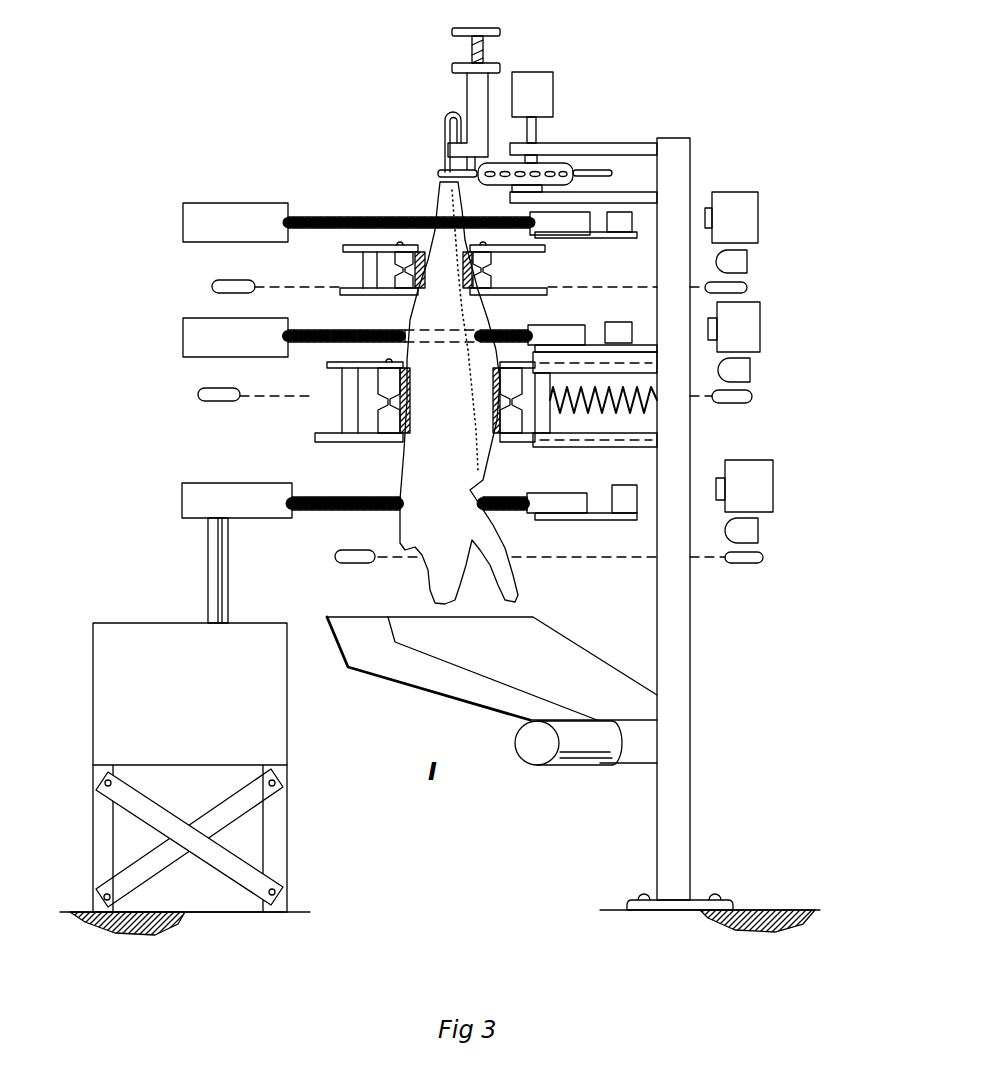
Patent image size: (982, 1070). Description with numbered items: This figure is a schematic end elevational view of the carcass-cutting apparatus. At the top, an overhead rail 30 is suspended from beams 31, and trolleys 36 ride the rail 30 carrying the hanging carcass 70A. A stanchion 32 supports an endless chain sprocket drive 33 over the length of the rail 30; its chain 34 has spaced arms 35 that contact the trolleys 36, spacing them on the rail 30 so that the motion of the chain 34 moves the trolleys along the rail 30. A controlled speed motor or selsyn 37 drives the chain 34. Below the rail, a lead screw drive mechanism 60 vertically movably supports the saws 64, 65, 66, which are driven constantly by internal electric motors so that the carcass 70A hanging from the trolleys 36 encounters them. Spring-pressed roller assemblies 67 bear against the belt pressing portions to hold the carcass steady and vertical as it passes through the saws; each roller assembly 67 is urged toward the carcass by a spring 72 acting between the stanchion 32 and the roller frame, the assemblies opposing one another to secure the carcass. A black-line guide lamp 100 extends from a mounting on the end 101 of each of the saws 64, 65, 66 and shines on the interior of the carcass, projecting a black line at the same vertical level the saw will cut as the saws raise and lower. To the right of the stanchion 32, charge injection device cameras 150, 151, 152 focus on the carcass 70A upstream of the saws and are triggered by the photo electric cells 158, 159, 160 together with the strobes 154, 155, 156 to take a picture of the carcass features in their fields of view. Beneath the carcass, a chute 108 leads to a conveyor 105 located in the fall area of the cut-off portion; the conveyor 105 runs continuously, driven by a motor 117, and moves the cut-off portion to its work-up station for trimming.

The beams 31 is at (483, 50).
The overhead rail 30 is at (467, 95).
The trolleys 36 is at (445, 135).
The spaced arms 35 is at (438, 172).
The controlled speed motor or selsyn 37 is at (553, 85).
The chain 34 is at (522, 165).
The endless chain sprocket drive 33 is at (573, 180).
The stanchion 32 is at (690, 150).
The charge injection device camera 152 is at (758, 215).
The strobe 156 is at (747, 262).
The photo electric cell 160 is at (747, 288).
The charge injection device camera 151 is at (760, 326).
The strobe 155 is at (750, 372).
The photo electric cell 159 is at (740, 402).
The charge injection device camera 150 is at (773, 482).
The strobe 154 is at (758, 531).
The photo electric cell 158 is at (752, 563).
The saw 66 is at (183, 220).
The saw 65 is at (183, 335).
The saw 64 is at (182, 505).
The spring-pressed roller assembly 67 is at (348, 256).
The end of the saw 101 is at (560, 330).
The black-line guide lamp 100 is at (640, 232).
The spring 72 is at (625, 415).
The carcass 70A is at (402, 468).
The lead screw drive mechanism 60 is at (93, 708).
The chute 108 is at (400, 680).
The motor 117 is at (525, 757).
The conveyor 105 is at (630, 770).